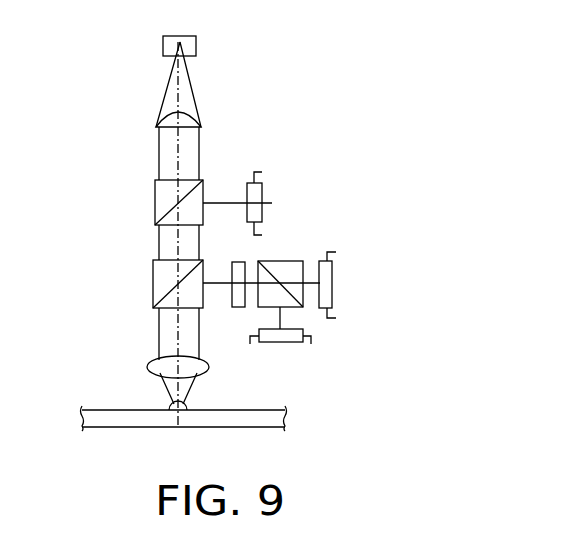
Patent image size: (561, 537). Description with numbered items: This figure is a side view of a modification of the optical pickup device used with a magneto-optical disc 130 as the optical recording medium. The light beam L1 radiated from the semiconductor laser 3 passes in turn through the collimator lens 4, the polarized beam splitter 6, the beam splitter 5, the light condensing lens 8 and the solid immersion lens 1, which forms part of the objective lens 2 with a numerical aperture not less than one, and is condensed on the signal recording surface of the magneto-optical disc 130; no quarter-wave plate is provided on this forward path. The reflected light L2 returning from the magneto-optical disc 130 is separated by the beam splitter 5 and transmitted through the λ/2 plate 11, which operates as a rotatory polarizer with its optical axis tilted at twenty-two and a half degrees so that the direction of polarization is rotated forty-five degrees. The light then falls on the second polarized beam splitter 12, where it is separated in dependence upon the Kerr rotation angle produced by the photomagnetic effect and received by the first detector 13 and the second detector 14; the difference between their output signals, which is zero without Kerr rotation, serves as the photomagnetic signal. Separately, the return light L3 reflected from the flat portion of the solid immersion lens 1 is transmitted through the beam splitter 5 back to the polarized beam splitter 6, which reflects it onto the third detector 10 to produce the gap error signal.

The solid immersion lens 1 is at (170, 406).
The objective lens 2 is at (213, 398).
The semiconductor laser 3 is at (197, 42).
The collimator lens 4 is at (193, 118).
The beam splitter 5 is at (153, 273).
The polarized beam splitter 6 is at (193, 178).
The light condensing lens 8 is at (150, 363).
The third detector 10 is at (262, 184).
The λ/2 plate 11 is at (244, 262).
The second polarized beam splitter 12 is at (300, 259).
The first detector 13 is at (333, 268).
The second detector 14 is at (287, 342).
The magneto-optical disc 130 is at (249, 427).
The light beam L1 is at (172, 87).
The reflected light L2 is at (228, 343).
The return light L3 is at (224, 200).